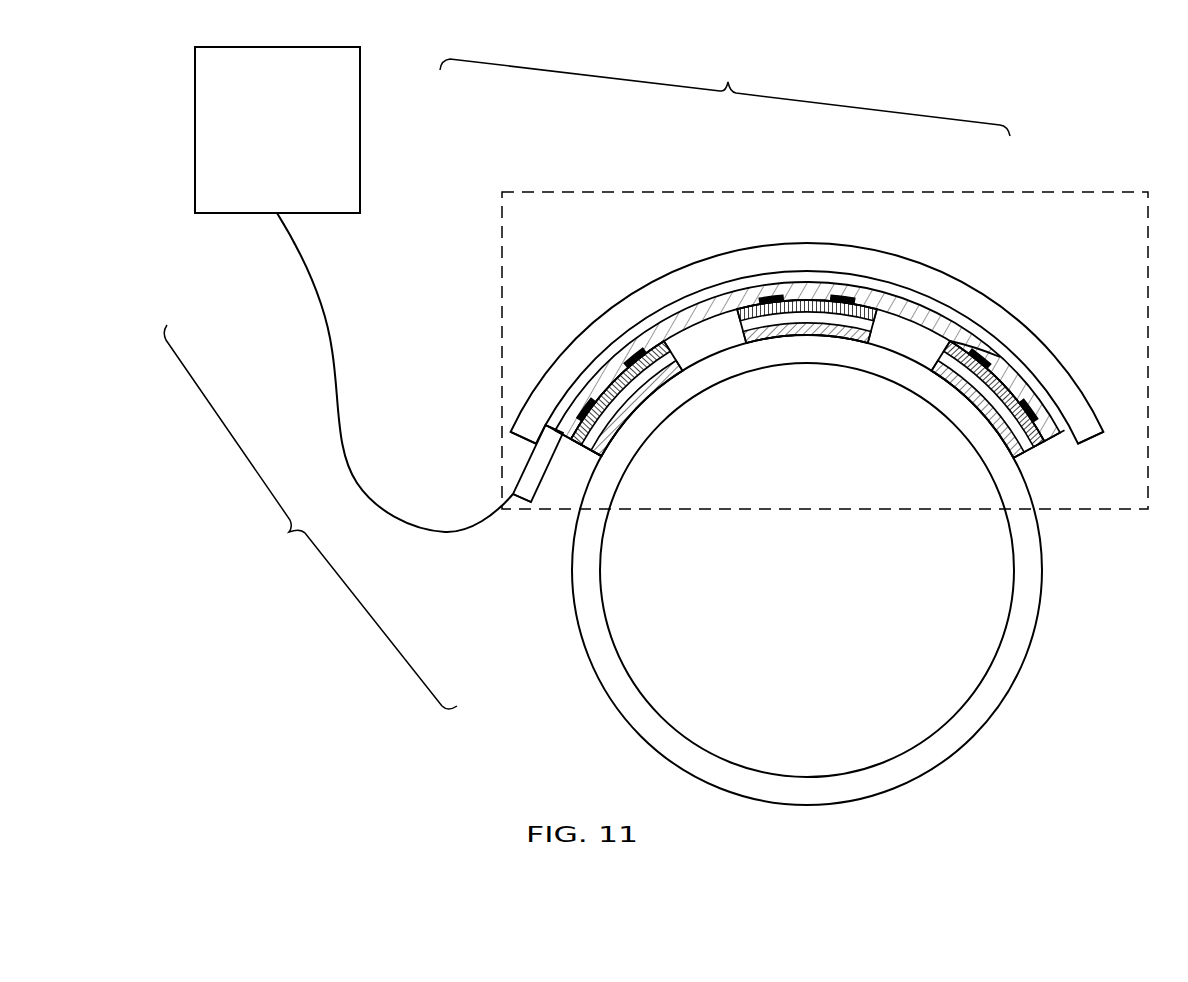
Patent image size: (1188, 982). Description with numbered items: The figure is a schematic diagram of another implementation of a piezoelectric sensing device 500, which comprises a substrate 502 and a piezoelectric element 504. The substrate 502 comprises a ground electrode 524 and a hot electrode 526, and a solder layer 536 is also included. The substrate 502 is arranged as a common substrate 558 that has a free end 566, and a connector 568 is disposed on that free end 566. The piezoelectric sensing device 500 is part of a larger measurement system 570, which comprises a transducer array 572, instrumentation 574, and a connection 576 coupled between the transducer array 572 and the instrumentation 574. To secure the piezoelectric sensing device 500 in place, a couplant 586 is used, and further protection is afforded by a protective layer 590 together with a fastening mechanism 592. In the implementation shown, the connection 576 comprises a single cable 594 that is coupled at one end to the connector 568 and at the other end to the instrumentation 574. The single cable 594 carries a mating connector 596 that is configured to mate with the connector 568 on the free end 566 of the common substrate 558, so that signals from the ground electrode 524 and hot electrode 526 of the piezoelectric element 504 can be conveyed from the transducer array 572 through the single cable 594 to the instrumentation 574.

The piezoelectric sensing device 500 is at (759, 464).
The substrate 502 is at (1057, 453).
The piezoelectric element 504 is at (622, 400).
The ground electrode 524 is at (641, 352).
The hot electrode 526 is at (579, 412).
The solder layer 536 is at (558, 478).
The common substrate 558 is at (985, 343).
The free end 566 is at (537, 452).
The connector 568 is at (549, 413).
The measurement system 570 is at (725, 91).
The transducer array 572 is at (1085, 192).
The instrumentation 574 is at (360, 120).
The connection 576 is at (310, 517).
The couplant 586 is at (582, 478).
The protective layer 590 is at (1066, 430).
The fastening mechanism 592 is at (530, 410).
The single cable 594 is at (328, 322).
The mating connector 596 is at (524, 500).